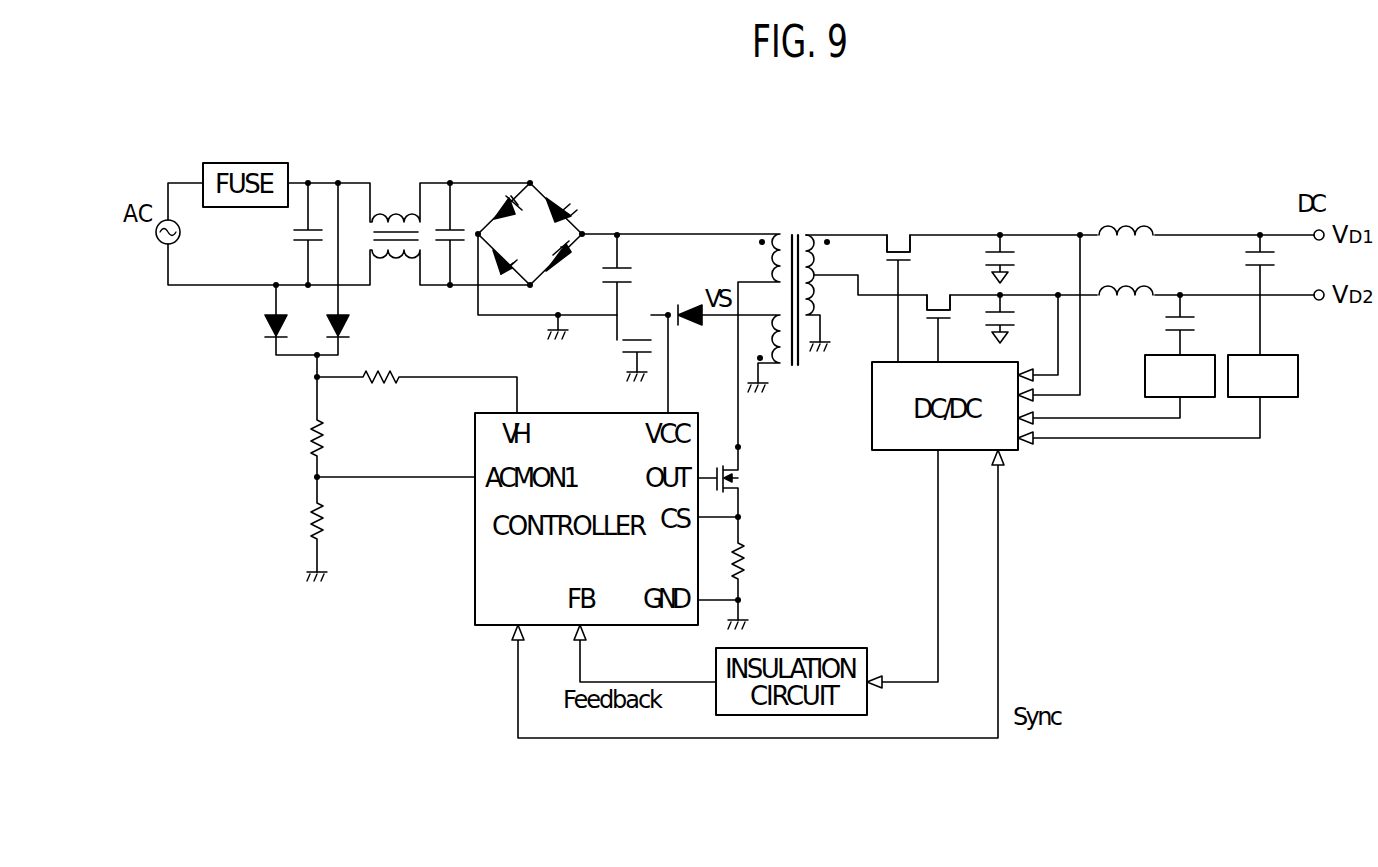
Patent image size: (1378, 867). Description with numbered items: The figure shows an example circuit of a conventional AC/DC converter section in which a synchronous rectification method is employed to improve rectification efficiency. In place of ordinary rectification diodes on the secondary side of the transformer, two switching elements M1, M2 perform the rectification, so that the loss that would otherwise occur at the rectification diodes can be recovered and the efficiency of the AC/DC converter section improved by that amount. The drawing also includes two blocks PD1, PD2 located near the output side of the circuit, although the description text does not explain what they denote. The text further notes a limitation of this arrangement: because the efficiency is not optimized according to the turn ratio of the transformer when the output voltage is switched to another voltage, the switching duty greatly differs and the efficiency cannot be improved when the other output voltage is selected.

The synchronous rectification switch M1 is at (897, 228).
The synchronous rectification switch M2 is at (940, 288).
The power detector PD1 is at (1263, 376).
The power detector PD2 is at (1180, 376).